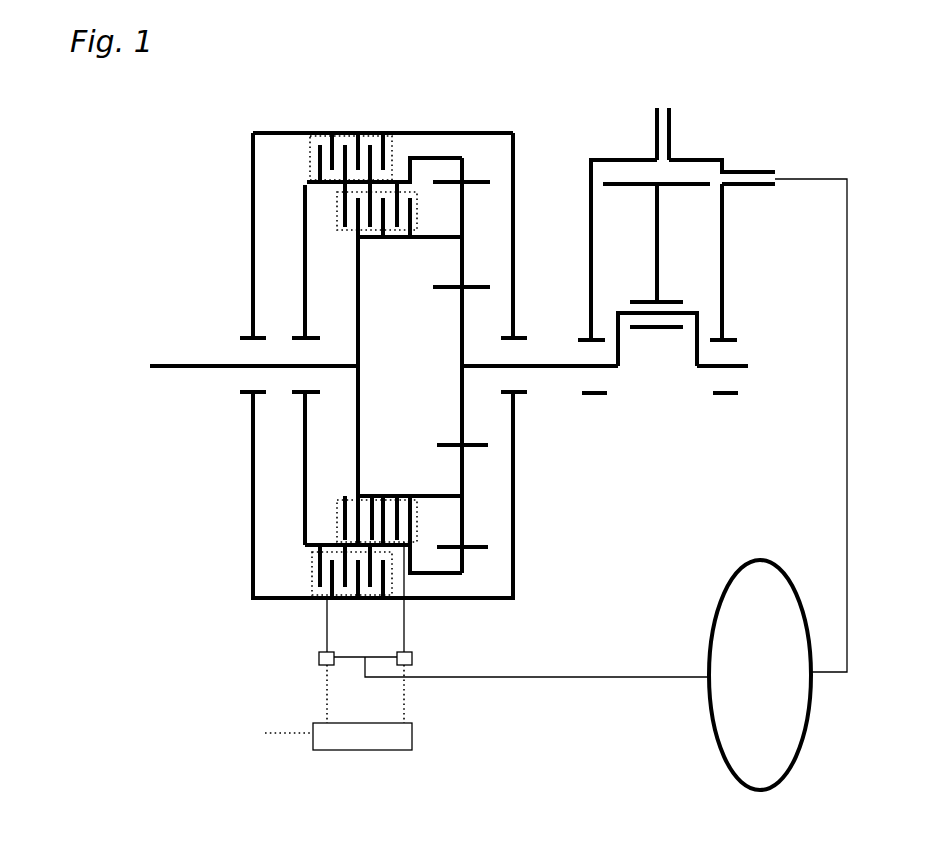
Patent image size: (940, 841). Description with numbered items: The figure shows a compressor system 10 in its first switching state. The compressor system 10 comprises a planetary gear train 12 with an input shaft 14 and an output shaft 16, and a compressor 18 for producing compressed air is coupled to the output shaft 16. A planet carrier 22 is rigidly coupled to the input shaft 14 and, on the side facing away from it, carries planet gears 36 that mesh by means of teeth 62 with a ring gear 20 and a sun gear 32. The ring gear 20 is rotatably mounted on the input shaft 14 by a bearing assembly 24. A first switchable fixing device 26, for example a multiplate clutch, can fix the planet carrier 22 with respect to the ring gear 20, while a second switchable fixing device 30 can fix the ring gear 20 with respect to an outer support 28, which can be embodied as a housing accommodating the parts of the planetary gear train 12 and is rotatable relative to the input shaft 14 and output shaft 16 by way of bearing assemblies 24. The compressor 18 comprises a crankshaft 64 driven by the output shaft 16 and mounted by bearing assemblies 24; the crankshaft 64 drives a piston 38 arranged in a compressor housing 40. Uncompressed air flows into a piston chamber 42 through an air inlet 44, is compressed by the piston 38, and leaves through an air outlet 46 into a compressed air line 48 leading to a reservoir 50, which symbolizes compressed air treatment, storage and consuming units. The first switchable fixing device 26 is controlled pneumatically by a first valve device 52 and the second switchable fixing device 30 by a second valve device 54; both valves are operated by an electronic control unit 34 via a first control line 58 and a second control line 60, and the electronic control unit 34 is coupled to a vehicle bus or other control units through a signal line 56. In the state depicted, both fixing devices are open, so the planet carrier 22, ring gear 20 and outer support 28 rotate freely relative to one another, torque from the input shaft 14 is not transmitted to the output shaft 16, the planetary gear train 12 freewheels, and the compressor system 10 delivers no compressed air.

The compressor system 10 is at (549, 107).
The planetary gear train 12 is at (235, 223).
The input shaft 14 is at (187, 368).
The output shaft 16 is at (552, 375).
The compressor 18 is at (717, 143).
The ring gear 20 is at (437, 160).
The planet carrier 22 is at (362, 298).
The bearing assembly 24 is at (247, 357).
The first switchable fixing device 26 is at (352, 228).
The outer support 28 is at (255, 473).
The second switchable fixing device 30 is at (308, 157).
The sun gear 32 is at (437, 365).
The electronic control unit 34 is at (417, 733).
The planet gear 36 is at (465, 275).
The piston 38 is at (658, 263).
The compressor housing 40 is at (727, 270).
The piston chamber 42 is at (617, 168).
The air inlet 44 is at (672, 130).
The air outlet 46 is at (752, 185).
The compressed air line 48 is at (848, 297).
The reservoir 50 is at (783, 677).
The first valve device 52 is at (412, 655).
The second valve device 54 is at (318, 660).
The signal line 56 is at (290, 730).
The first control line 58 is at (408, 692).
The second control line 60 is at (328, 687).
The teeth 62 is at (467, 182).
The crankshaft 64 is at (620, 342).